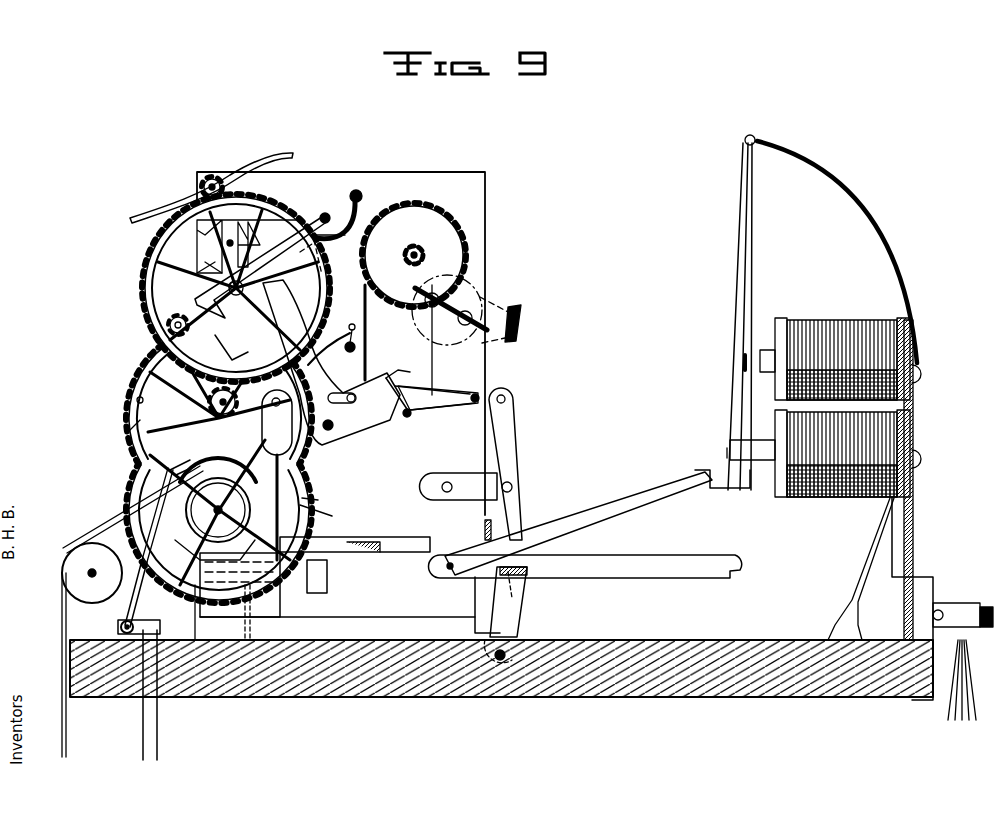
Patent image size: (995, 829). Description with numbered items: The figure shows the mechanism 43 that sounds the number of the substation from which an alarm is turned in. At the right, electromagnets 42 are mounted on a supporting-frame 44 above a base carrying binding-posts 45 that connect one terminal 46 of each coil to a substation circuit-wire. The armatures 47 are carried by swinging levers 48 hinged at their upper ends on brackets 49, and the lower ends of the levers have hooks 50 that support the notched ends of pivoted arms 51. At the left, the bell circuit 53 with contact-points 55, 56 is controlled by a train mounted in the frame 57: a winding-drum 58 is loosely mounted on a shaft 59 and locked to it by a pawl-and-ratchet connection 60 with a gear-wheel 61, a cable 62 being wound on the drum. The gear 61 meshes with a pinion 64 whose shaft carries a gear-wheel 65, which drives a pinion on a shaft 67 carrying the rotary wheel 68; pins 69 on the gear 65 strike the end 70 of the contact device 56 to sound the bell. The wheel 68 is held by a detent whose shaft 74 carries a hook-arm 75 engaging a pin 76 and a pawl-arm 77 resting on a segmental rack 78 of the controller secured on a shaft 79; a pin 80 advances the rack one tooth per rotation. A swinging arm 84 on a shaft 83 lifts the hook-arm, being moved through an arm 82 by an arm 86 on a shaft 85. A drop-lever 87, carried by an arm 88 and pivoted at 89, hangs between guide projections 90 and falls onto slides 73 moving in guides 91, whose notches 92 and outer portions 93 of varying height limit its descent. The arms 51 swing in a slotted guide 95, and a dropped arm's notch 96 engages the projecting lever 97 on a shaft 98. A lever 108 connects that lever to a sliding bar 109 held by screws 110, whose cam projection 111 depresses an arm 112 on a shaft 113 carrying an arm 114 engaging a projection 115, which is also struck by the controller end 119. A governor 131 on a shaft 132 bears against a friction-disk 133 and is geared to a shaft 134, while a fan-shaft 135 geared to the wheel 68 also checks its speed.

The electromagnet 42 is at (848, 396).
The mechanism 43 is at (501, 657).
The supporting-frame 44 is at (912, 538).
The binding-post 45 is at (968, 605).
The terminal 46 is at (933, 590).
The armature 47 is at (735, 362).
The swinging lever 48 is at (740, 292).
The supporting arm or bracket 49 is at (888, 244).
The projection or hook 50 is at (718, 492).
The pivoted arm 51 is at (580, 510).
The electric circuit 53 is at (161, 695).
The contact-point 55 is at (152, 622).
The contact device 56 is at (135, 636).
The frame 57 is at (425, 175).
The winding-drum 58 is at (218, 510).
The shaft 59 is at (218, 510).
The pawl-and-ratchet connection 60 is at (190, 553).
The gear-wheel 61 is at (130, 492).
The cable 62 is at (70, 596).
The pinion 64 is at (208, 404).
The gear-wheel 65 is at (130, 368).
The shaft 67 is at (248, 283).
The rotary wheel or gear 68 is at (140, 274).
The projection or pin 69 is at (128, 423).
The end of contact device 70 is at (168, 511).
The determining element or slide 73 is at (355, 559).
The shaft 74 is at (328, 215).
The hook-arm 75 is at (257, 244).
The pin 76 is at (248, 246).
The pawl-arm 77 is at (208, 268).
The segmental rack 78 is at (218, 343).
The shaft 79 is at (330, 432).
The pin 80 is at (182, 333).
The arm 82 is at (323, 257).
The shaft 83 is at (358, 192).
The swinging arm 84 is at (322, 214).
The shaft 85 is at (357, 348).
The projection or arm 86 is at (356, 328).
The drop-lever 87 is at (289, 507).
The arm 88 is at (318, 425).
The pivot 89 is at (277, 422).
The guide projection 90 is at (320, 515).
The guide 91 is at (247, 643).
The notch or recess 92 is at (327, 585).
The outer portion of slide 93 is at (210, 597).
The slotted guide 95 is at (483, 532).
The notch or recess 96 is at (525, 568).
The projecting lever 97 is at (520, 614).
The shaft 98 is at (498, 662).
The lever 108 is at (518, 470).
The sliding bar 109 is at (508, 430).
The screw 110 is at (350, 392).
The cam or trip projection 111 is at (432, 376).
The arm 112 is at (470, 392).
The shaft 113 is at (445, 410).
The arm 114 is at (398, 416).
The projection 115 is at (408, 418).
The end of controller 119 is at (390, 385).
The governor 131 is at (500, 312).
The shaft 132 is at (476, 288).
The friction-disk 133 is at (470, 340).
The shaft 134 is at (418, 252).
The fan-shaft 135 is at (212, 177).